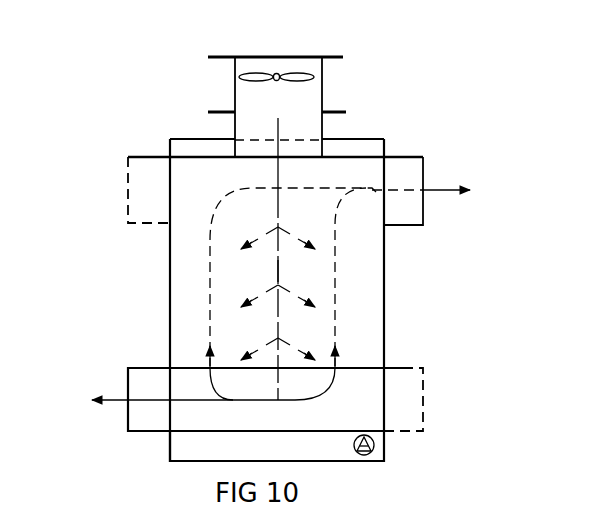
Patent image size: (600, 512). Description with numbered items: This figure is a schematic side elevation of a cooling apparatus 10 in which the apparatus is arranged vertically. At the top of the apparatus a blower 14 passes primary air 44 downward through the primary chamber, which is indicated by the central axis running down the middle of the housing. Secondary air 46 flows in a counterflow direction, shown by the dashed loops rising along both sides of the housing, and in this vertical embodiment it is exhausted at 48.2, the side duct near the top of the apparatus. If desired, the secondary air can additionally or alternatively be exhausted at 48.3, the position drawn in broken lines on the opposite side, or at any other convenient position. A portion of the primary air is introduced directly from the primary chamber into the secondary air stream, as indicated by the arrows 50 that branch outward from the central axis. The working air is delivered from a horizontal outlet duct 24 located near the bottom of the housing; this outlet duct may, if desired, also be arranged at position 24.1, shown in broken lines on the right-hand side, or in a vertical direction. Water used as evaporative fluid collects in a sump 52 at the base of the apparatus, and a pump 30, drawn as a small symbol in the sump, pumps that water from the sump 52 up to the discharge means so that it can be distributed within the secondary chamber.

The cooling apparatus 10 is at (478, 54).
The blower 14 is at (313, 78).
The secondary air exhaust position 48.3 is at (150, 157).
The secondary air exhaust 48.2 is at (437, 190).
The secondary air 46 is at (338, 268).
The arrows indicating primary air introduced into secondary air stream 50 is at (293, 234).
The primary air 44 is at (278, 271).
The outlet duct 24 is at (149, 368).
The alternative outlet duct position 24.1 is at (411, 366).
The sump 52 is at (182, 443).
The pump 30 is at (375, 443).